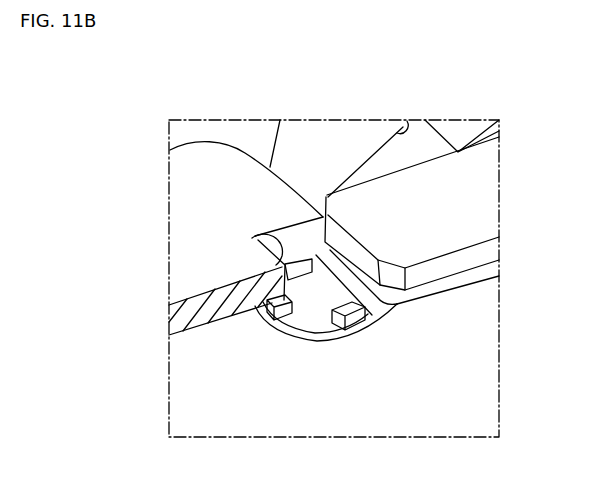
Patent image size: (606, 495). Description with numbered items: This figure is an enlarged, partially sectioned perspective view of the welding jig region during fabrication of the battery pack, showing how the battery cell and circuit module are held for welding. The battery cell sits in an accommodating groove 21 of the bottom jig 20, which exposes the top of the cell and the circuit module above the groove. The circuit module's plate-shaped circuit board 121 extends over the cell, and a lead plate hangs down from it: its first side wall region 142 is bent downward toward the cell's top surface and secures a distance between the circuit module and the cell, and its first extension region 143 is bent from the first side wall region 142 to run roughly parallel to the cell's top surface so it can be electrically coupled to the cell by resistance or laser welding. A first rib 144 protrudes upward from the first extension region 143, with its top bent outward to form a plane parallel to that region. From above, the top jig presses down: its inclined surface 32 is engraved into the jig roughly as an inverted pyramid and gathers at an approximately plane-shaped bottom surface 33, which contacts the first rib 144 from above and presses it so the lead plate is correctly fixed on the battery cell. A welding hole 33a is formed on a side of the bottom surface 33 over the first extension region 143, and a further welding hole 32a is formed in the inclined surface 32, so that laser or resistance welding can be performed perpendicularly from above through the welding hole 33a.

The bottom jig 20 is at (487, 353).
The accommodating groove 21 is at (487, 279).
The inclined surface 32 is at (312, 133).
The welding hole 32a is at (407, 121).
The bottom surface 33 is at (192, 196).
The welding hole 33a is at (255, 237).
The circuit board 121 is at (482, 223).
The first side wall region 142 is at (391, 305).
The first extension region 143 is at (316, 325).
The first rib 144 is at (350, 313).